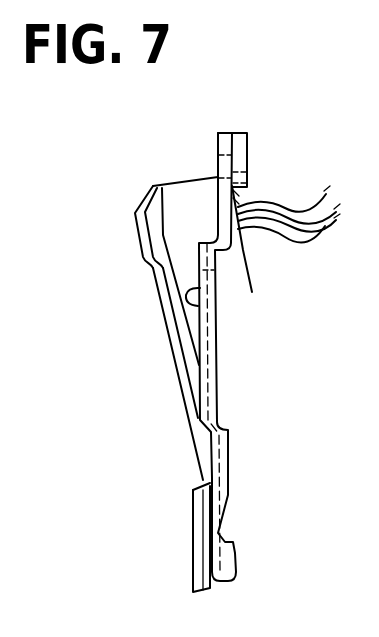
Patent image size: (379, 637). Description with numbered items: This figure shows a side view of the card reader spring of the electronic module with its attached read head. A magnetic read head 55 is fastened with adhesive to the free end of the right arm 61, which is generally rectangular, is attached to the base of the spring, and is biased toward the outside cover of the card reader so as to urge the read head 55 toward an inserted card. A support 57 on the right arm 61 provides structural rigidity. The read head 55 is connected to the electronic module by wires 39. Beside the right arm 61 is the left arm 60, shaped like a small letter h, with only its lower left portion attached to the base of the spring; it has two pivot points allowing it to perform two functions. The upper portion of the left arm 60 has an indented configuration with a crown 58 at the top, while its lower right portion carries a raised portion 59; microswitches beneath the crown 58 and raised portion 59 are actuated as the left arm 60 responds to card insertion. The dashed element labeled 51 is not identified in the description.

The wires 39 is at (277, 240).
The contact 51 is at (238, 198).
The magnetic read head 55 is at (185, 203).
The support 57 is at (163, 300).
The crown 58 is at (136, 247).
The raised portion 59 is at (232, 582).
The left arm 60 is at (190, 402).
The right arm 61 is at (192, 302).